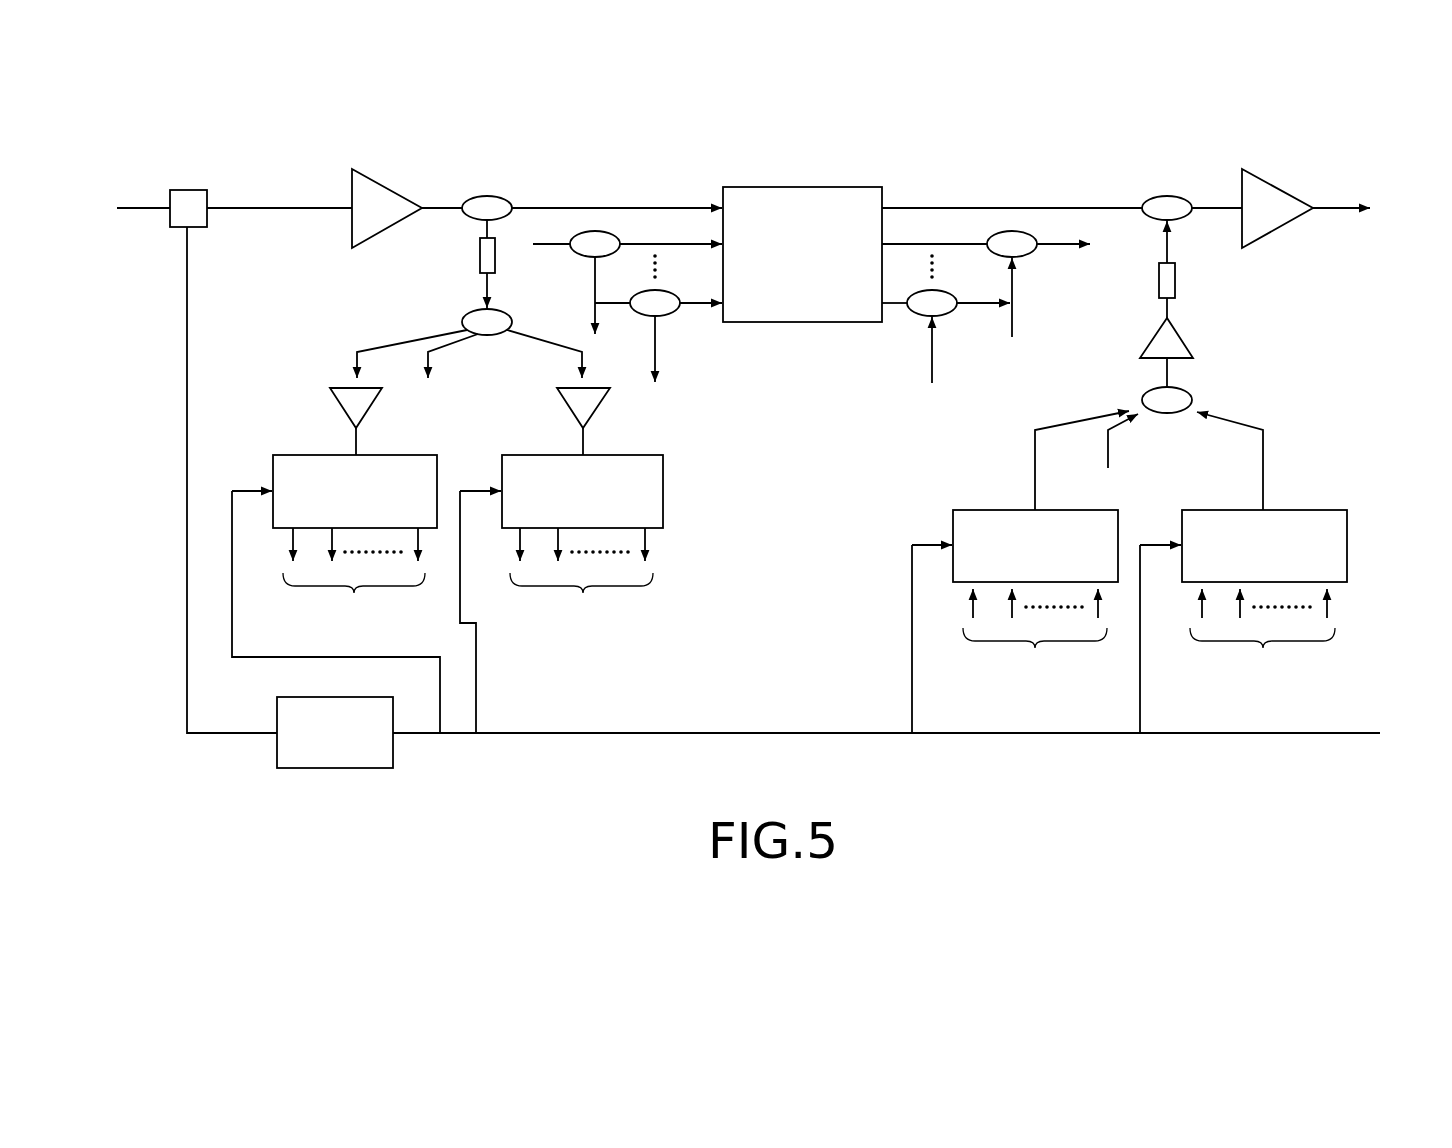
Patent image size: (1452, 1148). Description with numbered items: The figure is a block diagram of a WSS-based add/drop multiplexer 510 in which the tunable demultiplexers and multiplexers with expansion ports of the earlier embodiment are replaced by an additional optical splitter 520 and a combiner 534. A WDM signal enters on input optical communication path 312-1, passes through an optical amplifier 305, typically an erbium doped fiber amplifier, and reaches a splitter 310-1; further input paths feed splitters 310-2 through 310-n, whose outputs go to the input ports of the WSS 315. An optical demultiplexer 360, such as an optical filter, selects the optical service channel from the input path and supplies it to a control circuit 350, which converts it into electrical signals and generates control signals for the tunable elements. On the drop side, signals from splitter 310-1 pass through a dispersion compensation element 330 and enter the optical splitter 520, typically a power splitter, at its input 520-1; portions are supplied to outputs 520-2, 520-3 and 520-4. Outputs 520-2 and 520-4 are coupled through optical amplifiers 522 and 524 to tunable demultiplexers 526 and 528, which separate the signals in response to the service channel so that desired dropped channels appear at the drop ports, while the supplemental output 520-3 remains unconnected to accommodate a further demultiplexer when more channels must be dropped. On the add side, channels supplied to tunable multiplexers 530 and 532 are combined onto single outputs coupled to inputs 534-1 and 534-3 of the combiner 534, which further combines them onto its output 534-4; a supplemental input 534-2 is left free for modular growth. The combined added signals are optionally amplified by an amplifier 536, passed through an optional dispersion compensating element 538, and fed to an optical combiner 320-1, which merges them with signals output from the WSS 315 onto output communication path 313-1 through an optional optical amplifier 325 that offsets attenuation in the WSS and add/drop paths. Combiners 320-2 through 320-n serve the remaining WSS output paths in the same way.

The optical demultiplexer 360 is at (183, 190).
The input optical communication path 312-1 is at (280, 207).
The optical amplifier 305 is at (390, 188).
The splitter 310-1 is at (460, 197).
The splitter 310-2 is at (587, 230).
The splitter 310-n is at (667, 317).
The WSS 315 is at (773, 187).
The optical combiner 320-1 is at (1145, 198).
The combiner 320-2 is at (1010, 230).
The combiner 320-n is at (913, 317).
The output communication path 313-1 is at (1218, 207).
The optical amplifier 325 is at (1270, 185).
The dispersion compensation element 330 is at (495, 263).
The input 520-1 is at (481, 297).
The optical splitter 520 is at (462, 315).
The output 520-2 is at (357, 350).
The supplemental output 520-3 is at (428, 352).
The output 520-4 is at (577, 352).
The optical amplifier 522 is at (347, 413).
The optical amplifier 524 is at (607, 403).
The tunable demultiplexer 526 is at (273, 463).
The tunable demultiplexer 528 is at (665, 487).
The dispersion compensating element 538 is at (1159, 275).
The amplifier 536 is at (1147, 340).
The combiner 534 is at (1145, 395).
The input 534-1 is at (1037, 428).
The supplemental input 534-2 is at (1112, 432).
The input 534-3 is at (1262, 430).
The output 534-4 is at (1167, 375).
The tunable multiplexer 530 is at (953, 517).
The tunable multiplexer 532 is at (1347, 538).
The control circuit 350 is at (297, 770).
The add/drop multiplexer 510 is at (465, 817).